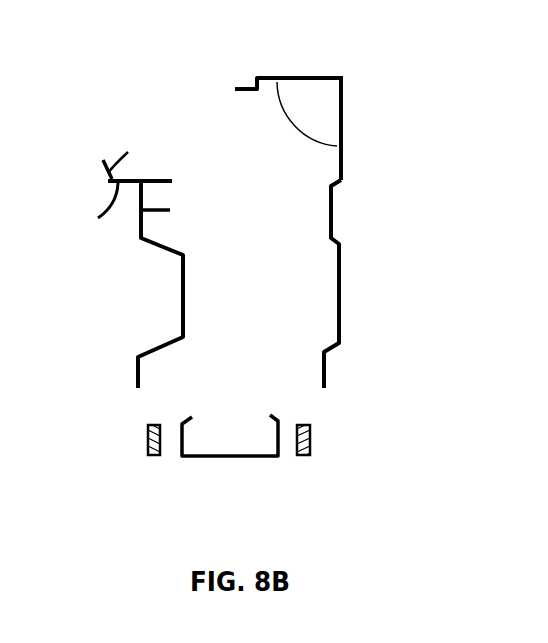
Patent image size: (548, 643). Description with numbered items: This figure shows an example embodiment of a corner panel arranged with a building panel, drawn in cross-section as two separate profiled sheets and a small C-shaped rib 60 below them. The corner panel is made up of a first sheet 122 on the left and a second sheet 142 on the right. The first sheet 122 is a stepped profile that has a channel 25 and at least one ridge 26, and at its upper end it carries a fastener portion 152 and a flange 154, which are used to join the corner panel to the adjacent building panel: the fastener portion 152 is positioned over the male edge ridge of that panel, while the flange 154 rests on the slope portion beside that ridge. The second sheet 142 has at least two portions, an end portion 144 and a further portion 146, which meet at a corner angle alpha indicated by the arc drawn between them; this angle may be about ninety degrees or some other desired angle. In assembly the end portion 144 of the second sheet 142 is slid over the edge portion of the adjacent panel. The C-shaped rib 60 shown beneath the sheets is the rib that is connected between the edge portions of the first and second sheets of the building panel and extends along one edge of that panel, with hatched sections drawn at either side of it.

The channel 25 is at (123, 264).
The ridge 26 is at (178, 212).
The C-shaped rib 60 is at (245, 457).
The first sheet 122 is at (136, 371).
The second sheet 142 is at (338, 200).
The end portion 144 is at (318, 75).
The portion 146 is at (344, 123).
The fastener portion 152 is at (74, 219).
The flange 154 is at (146, 145).